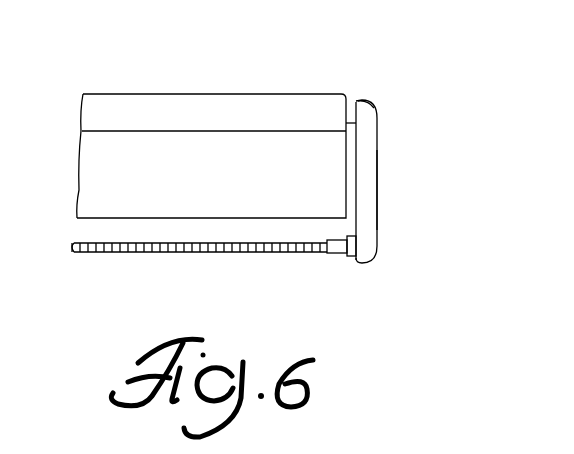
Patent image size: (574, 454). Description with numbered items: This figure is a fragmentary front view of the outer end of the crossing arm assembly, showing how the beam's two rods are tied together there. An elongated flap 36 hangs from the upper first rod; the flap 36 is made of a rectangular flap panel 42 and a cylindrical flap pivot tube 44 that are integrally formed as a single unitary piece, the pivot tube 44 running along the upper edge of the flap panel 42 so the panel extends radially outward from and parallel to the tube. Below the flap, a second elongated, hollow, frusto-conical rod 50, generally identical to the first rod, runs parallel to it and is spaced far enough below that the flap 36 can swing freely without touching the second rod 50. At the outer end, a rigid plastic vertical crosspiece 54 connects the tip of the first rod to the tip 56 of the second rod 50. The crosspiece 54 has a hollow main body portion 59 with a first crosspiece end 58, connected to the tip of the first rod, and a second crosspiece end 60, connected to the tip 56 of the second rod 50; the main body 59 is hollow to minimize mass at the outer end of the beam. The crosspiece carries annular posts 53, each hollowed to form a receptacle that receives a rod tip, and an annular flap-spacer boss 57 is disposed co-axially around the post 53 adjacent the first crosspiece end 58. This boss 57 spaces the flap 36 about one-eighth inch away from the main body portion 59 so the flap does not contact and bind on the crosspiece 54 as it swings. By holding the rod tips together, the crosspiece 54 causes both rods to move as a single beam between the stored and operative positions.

The flap 36 is at (117, 122).
The flap pivot tube 44 is at (227, 110).
The flap panel 42 is at (217, 203).
The second rod 50 is at (75, 262).
The tip of the second rod 56 is at (289, 250).
The annular post 53 is at (331, 252).
The annular flap-spacer boss 57 is at (352, 108).
The first crosspiece end 58 is at (371, 102).
The crosspiece 54 is at (382, 146).
The main body portion 59 is at (373, 184).
The second crosspiece end 60 is at (370, 258).